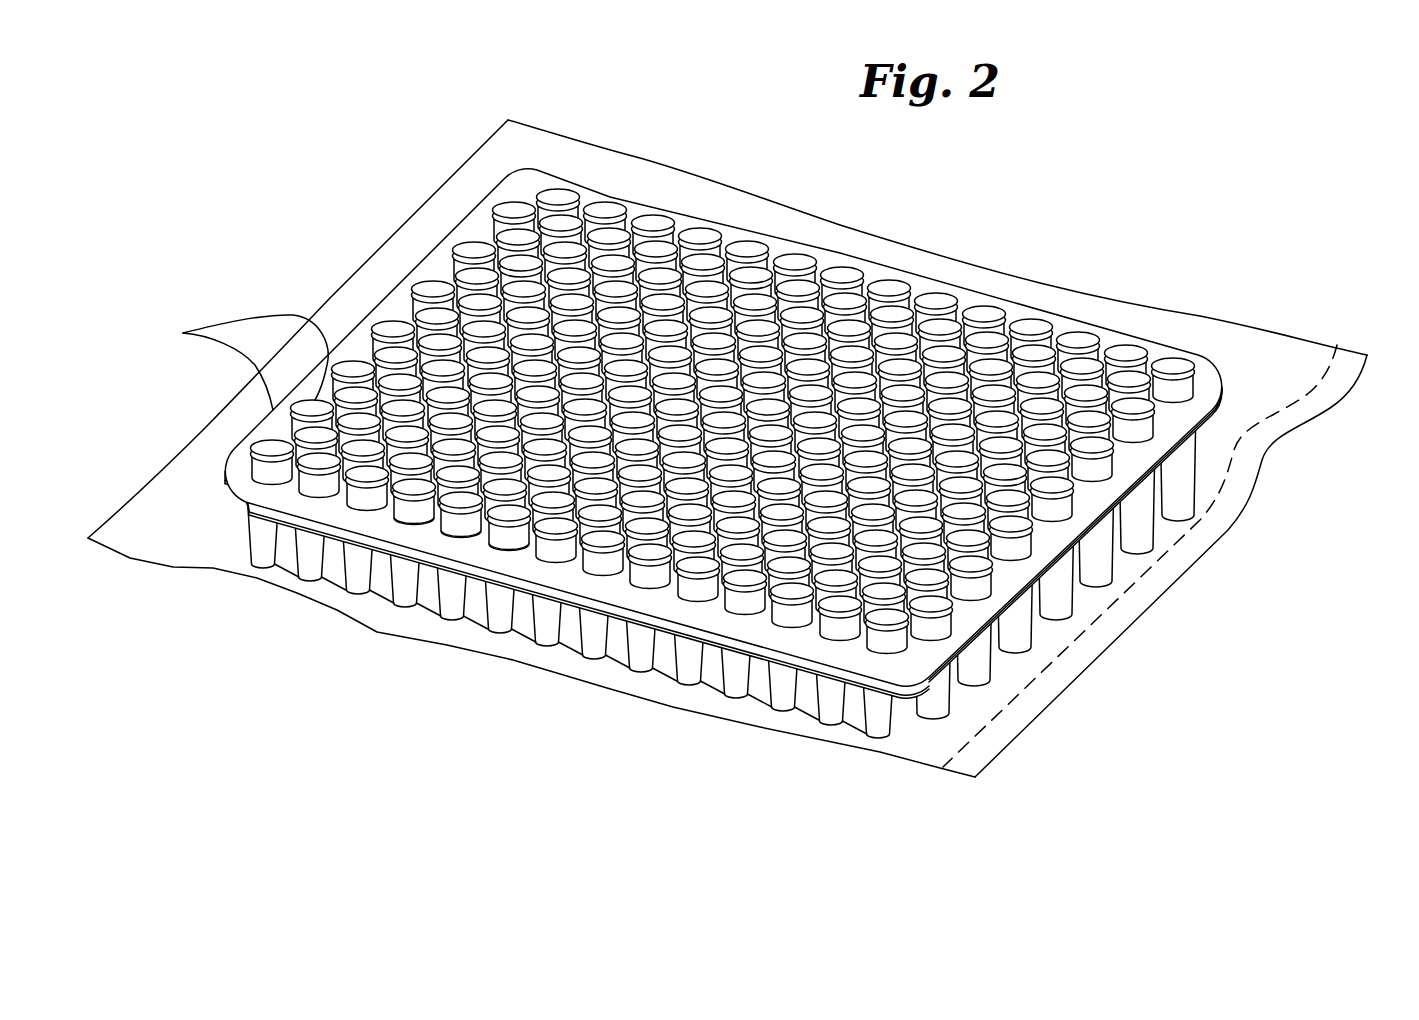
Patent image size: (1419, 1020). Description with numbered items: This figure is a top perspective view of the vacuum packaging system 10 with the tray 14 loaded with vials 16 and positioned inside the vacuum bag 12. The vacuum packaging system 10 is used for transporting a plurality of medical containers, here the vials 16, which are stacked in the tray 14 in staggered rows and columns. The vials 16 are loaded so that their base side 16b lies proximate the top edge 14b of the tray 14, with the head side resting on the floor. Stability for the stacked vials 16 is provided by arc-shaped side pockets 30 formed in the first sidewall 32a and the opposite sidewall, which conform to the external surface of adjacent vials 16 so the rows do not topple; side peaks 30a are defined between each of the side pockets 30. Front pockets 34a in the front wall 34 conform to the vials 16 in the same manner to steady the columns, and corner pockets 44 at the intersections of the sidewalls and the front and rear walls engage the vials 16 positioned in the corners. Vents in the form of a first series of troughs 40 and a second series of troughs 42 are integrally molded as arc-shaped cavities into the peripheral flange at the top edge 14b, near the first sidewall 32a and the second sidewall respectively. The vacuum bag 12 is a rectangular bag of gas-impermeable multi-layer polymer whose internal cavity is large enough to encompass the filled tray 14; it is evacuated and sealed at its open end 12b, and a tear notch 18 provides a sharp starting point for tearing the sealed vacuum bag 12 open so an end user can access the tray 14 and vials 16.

The vacuum packaging system 10 is at (463, 120).
The vacuum bag 12 is at (1258, 343).
The open end 12b is at (1115, 603).
The tray 14 is at (945, 740).
The top edge 14b is at (560, 580).
The vials 16 is at (938, 300).
The base side 16b is at (393, 330).
The tear notch 18 is at (1340, 402).
The side pockets 30 is at (462, 278).
The side peaks 30a is at (1138, 395).
The first sidewall 32a is at (1103, 540).
The front wall 34 is at (683, 662).
The front pockets 34a is at (384, 530).
The first series of troughs 40 is at (1035, 595).
The second series of troughs 42 is at (183, 333).
The corner pockets 44 is at (868, 632).